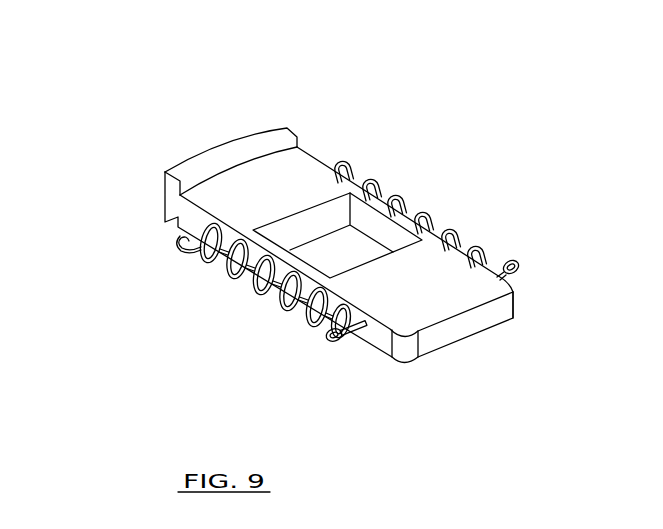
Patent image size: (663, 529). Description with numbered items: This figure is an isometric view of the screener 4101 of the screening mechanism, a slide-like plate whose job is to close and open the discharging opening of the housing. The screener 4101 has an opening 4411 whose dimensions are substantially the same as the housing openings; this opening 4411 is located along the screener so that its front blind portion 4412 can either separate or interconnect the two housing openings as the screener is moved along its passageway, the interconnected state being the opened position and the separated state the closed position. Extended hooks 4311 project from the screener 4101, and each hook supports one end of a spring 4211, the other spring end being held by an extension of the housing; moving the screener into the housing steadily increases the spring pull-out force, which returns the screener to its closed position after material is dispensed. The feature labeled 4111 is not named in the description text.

The screener 4101 is at (300, 173).
The raised lip 4111 is at (187, 163).
The springs 4211 is at (257, 290).
The extended hooks 4311 is at (345, 337).
The opening 4411 is at (355, 245).
The front blind portion 4412 is at (430, 292).